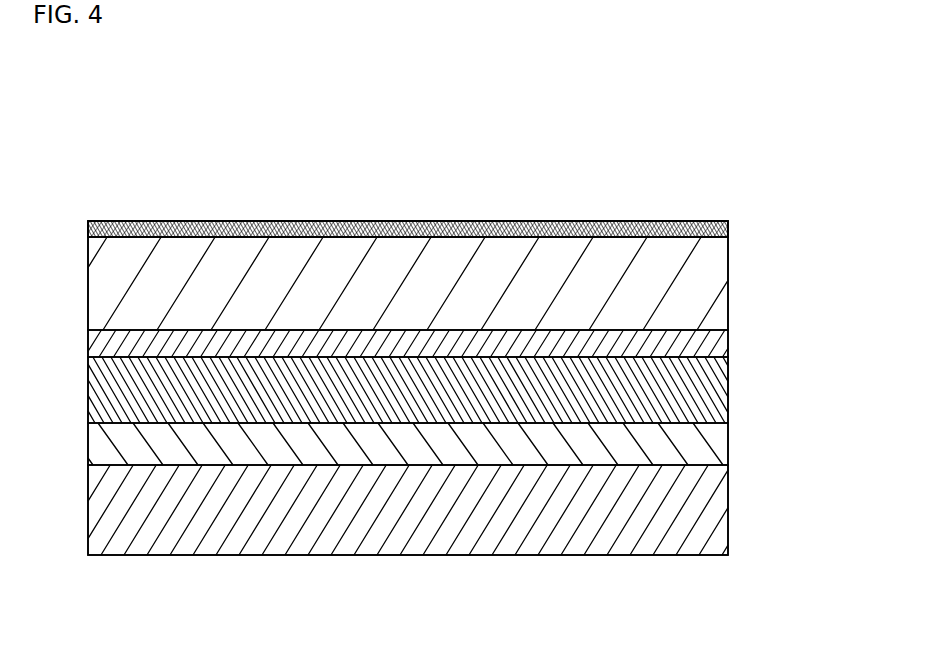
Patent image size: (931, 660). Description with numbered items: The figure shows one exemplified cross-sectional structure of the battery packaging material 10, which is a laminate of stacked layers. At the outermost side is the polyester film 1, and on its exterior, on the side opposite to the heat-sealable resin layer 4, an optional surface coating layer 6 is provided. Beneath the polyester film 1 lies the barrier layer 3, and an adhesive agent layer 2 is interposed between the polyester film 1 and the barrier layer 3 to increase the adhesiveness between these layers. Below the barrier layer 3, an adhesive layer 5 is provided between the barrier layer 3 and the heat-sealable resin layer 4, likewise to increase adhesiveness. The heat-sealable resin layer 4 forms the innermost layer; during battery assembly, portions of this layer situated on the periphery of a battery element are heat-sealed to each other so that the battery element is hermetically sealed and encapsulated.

The battery packaging material 10 is at (593, 175).
The surface coating layer 6 is at (728, 227).
The polyester film 1 is at (728, 282).
The adhesive agent layer 2 is at (728, 347).
The barrier layer 3 is at (728, 393).
The adhesive layer 5 is at (728, 442).
The heat-sealable resin layer 4 is at (728, 490).